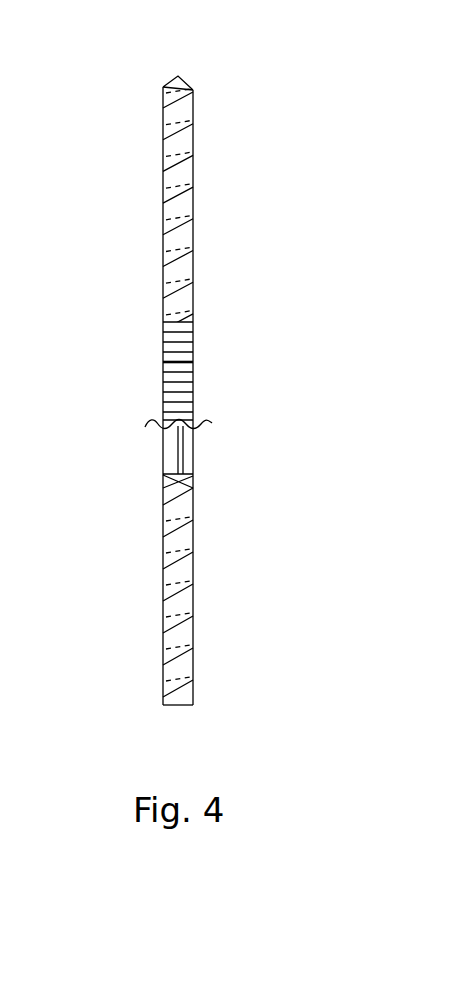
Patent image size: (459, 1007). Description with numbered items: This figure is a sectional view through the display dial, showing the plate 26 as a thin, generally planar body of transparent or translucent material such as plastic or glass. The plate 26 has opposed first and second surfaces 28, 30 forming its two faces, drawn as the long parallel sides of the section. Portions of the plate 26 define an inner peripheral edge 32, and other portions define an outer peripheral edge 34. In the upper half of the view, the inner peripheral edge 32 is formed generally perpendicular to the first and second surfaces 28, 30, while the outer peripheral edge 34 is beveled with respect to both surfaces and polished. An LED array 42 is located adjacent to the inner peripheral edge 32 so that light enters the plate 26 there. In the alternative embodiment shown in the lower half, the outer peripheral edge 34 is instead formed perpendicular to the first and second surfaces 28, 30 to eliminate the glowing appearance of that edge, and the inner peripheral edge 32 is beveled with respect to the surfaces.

The plate 26 is at (166, 386).
The first surface 28 is at (195, 109).
The second surface 30 is at (163, 146).
The inner peripheral edge 32 is at (163, 318).
The outer peripheral edge 34 is at (176, 78).
The LED array 42 is at (134, 345).